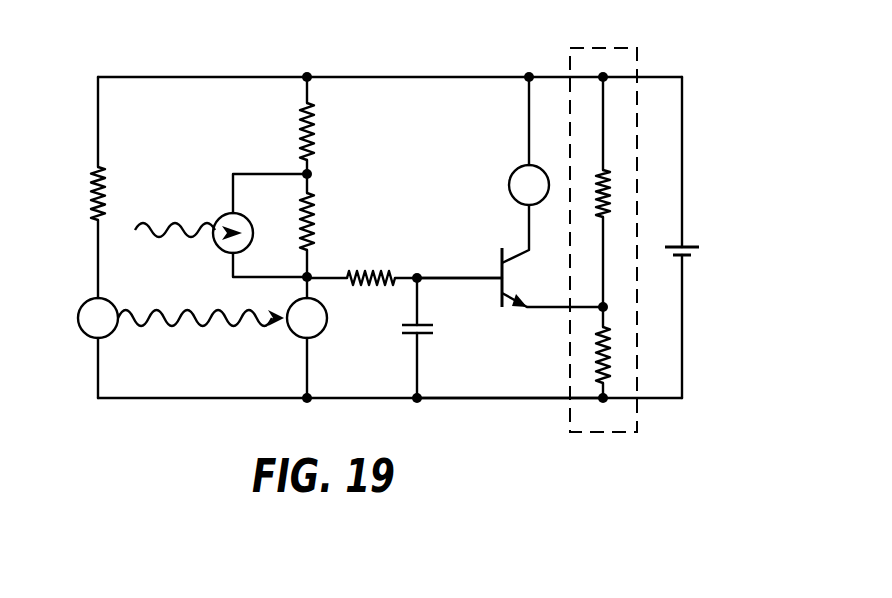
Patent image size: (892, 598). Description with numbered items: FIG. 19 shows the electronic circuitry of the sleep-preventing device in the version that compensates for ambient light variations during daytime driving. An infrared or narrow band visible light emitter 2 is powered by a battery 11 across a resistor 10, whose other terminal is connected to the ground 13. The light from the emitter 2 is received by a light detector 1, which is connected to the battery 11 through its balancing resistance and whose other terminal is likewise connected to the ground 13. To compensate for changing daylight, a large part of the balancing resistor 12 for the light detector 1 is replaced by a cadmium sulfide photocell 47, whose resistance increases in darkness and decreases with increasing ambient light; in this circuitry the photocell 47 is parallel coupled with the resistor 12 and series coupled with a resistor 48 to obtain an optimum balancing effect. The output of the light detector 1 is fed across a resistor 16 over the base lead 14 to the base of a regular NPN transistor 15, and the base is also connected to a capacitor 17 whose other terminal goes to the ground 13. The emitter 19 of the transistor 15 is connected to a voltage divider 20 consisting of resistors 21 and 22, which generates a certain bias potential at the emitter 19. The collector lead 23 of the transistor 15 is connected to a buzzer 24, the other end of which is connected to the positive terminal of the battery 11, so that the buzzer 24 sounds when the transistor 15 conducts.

The light detector 1 is at (296, 334).
The light emitter 2 is at (108, 334).
The resistor 10 is at (98, 190).
The battery 11 is at (684, 244).
The resistor 12 is at (314, 214).
The ground 13 is at (472, 400).
The base lead 14 is at (474, 280).
The NPN transistor 15 is at (500, 268).
The resistor 16 is at (378, 272).
The capacitor 17 is at (408, 336).
The emitter 19 is at (508, 312).
The voltage divider 20 is at (606, 47).
The resistor 21 is at (610, 182).
The resistor 22 is at (610, 362).
The collector lead 23 is at (515, 256).
The buzzer 24 is at (514, 172).
The cadmium sulfide photocell 47 is at (222, 222).
The resistor 48 is at (314, 135).